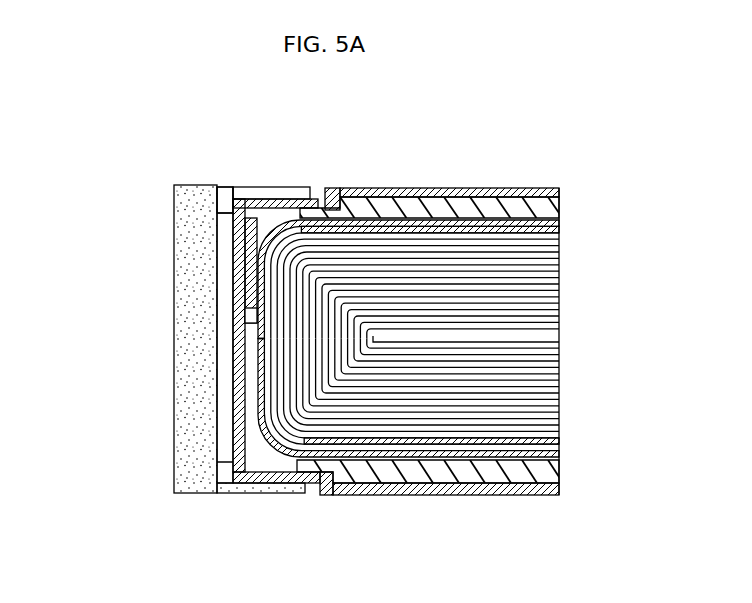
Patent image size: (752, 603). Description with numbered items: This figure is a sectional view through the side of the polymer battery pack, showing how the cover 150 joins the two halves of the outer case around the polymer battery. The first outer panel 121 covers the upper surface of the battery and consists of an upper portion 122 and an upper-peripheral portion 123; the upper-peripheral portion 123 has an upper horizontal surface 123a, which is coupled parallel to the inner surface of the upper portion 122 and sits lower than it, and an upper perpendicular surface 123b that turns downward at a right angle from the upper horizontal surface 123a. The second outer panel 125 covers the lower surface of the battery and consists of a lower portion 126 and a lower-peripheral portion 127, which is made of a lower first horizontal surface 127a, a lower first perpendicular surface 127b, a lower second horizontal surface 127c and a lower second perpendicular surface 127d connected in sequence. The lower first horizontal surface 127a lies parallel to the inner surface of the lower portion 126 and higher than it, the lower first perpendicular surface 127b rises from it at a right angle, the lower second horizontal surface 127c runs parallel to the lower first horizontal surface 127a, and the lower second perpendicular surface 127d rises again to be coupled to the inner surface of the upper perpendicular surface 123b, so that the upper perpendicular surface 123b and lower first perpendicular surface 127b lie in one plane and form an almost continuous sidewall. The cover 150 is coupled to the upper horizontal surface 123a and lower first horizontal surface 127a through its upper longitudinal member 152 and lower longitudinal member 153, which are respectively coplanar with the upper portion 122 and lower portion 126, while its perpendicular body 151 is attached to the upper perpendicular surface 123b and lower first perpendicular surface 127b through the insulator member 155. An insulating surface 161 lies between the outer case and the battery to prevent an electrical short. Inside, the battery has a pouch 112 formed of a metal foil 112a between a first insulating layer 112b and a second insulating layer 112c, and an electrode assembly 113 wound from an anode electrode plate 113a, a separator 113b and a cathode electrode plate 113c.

The cover 150 is at (165, 179).
The perpendicular body 151 is at (175, 233).
The upper longitudinal member 152 is at (195, 187).
The lower longitudinal member 153 is at (193, 495).
The insulator member 155 is at (222, 277).
The upper-peripheral portion 123 is at (305, 120).
The upper horizontal surface 123a is at (303, 187).
The upper perpendicular surface 123b is at (230, 213).
The first outer panel 121 is at (440, 178).
The upper portion 122 is at (388, 188).
The insulating surface 161 is at (512, 200).
The second outer panel 125 is at (440, 507).
The lower portion 126 is at (387, 495).
The pouch 112 is at (655, 205).
The metal foil 112a is at (560, 232).
The first insulating layer 112b is at (560, 222).
The second insulating layer 112c is at (560, 237).
The electrode assembly 113 is at (655, 415).
The anode electrode plate 113a is at (560, 450).
The separator 113b is at (560, 443).
The cathode electrode plate 113c is at (560, 427).
The lower-peripheral portion 127 is at (80, 312).
The lower first horizontal surface 127a is at (232, 488).
The lower first perpendicular surface 127b is at (232, 395).
The lower second horizontal surface 127c is at (240, 310).
The lower second perpendicular surface 127d is at (232, 297).